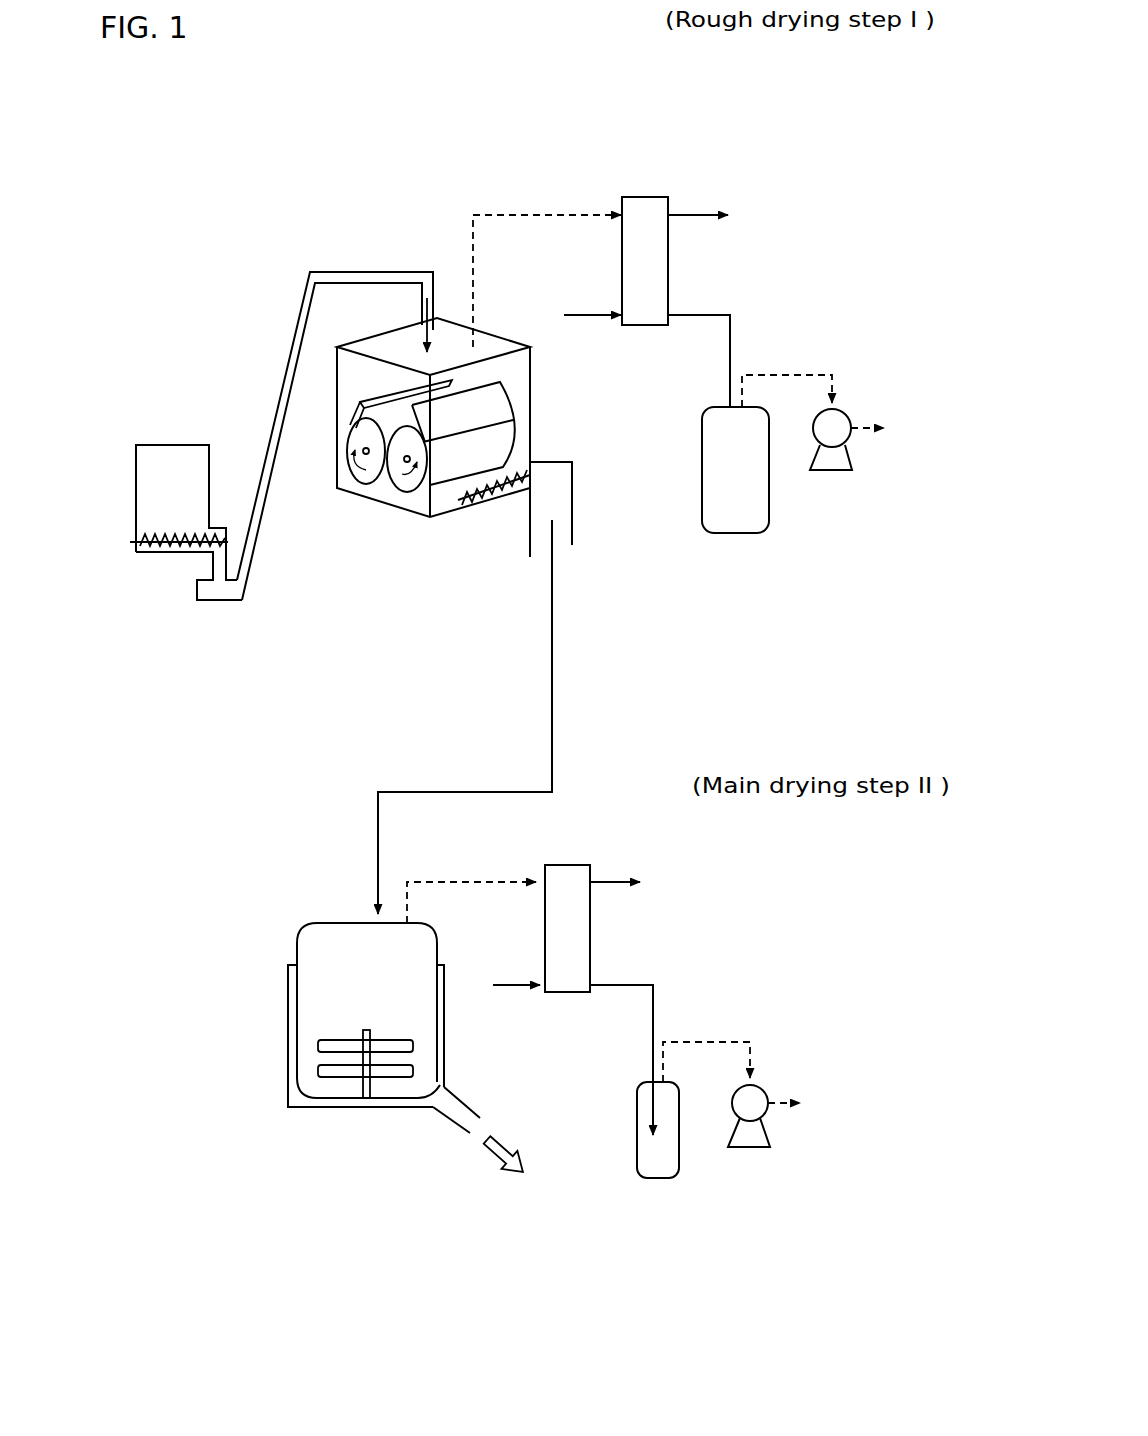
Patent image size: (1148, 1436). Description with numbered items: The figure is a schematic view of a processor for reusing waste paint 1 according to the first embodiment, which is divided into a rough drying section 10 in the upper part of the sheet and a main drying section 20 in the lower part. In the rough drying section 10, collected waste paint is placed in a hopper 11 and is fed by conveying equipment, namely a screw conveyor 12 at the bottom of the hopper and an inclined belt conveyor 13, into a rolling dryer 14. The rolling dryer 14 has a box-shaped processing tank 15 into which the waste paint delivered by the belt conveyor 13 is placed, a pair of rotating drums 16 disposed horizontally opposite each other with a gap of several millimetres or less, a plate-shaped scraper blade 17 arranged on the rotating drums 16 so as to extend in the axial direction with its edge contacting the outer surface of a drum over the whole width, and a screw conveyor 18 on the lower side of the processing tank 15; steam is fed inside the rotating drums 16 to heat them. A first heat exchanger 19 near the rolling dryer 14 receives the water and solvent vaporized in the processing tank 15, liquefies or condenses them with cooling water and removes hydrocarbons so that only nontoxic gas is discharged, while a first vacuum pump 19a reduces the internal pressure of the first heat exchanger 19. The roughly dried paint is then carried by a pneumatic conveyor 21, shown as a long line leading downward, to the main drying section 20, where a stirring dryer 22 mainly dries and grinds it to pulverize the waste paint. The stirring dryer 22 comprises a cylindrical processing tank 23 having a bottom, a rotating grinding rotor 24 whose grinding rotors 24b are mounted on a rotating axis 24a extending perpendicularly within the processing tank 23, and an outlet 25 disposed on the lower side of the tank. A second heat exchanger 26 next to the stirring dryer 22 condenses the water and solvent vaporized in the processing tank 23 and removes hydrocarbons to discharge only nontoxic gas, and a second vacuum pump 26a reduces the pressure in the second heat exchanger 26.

The processor for reusing waste paint 1 is at (543, 136).
The rough drying section 10 is at (186, 277).
The hopper 11 is at (156, 446).
The screw conveyor 12 is at (146, 547).
The belt conveyor 13 is at (284, 384).
The rolling dryer 14 is at (450, 257).
The processing tank 15 is at (532, 375).
The rotating drums 16 is at (360, 481).
The scraper blade 17 is at (370, 412).
The screw conveyor 18 is at (458, 503).
The first heat exchanger 19 is at (651, 186).
The first vacuum pump 19a is at (727, 528).
The main drying section 20 is at (247, 828).
The pneumatic conveyor 21 is at (553, 630).
The stirring dryer 22 is at (285, 957).
The processing tank 23 is at (292, 1000).
The rotating grinding rotor 24 is at (383, 1086).
The rotating axis 24a is at (358, 1088).
The grinding rotors 24b is at (327, 1047).
The outlet 25 is at (463, 1122).
The second heat exchanger 26 is at (572, 850).
The second vacuum pump 26a is at (655, 1173).